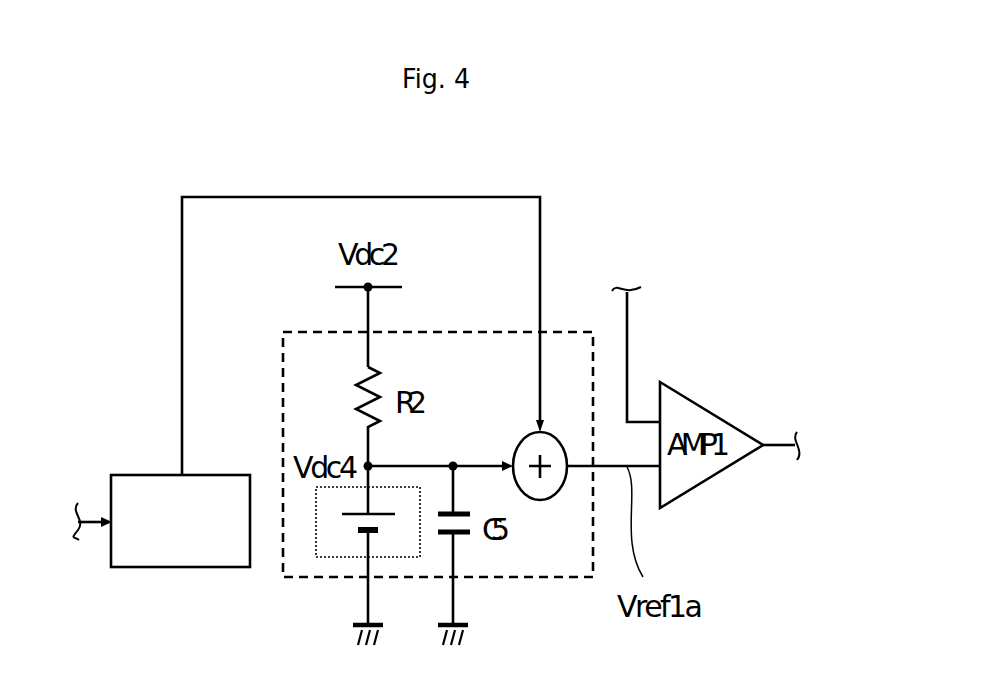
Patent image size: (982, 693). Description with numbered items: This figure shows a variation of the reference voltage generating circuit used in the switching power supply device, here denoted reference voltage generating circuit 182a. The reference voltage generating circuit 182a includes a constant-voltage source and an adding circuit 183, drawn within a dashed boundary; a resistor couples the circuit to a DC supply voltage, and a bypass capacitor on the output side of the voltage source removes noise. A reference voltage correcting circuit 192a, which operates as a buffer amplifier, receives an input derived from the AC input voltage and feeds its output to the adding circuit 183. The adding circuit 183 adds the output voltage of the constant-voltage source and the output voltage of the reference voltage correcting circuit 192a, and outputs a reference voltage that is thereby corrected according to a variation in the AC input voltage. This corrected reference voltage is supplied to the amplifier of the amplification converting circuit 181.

The reference voltage generating circuit 182a is at (557, 332).
The adding circuit 183 is at (543, 499).
The amplification converting circuit 181 is at (713, 410).
The reference voltage correcting circuit 192a is at (182, 567).